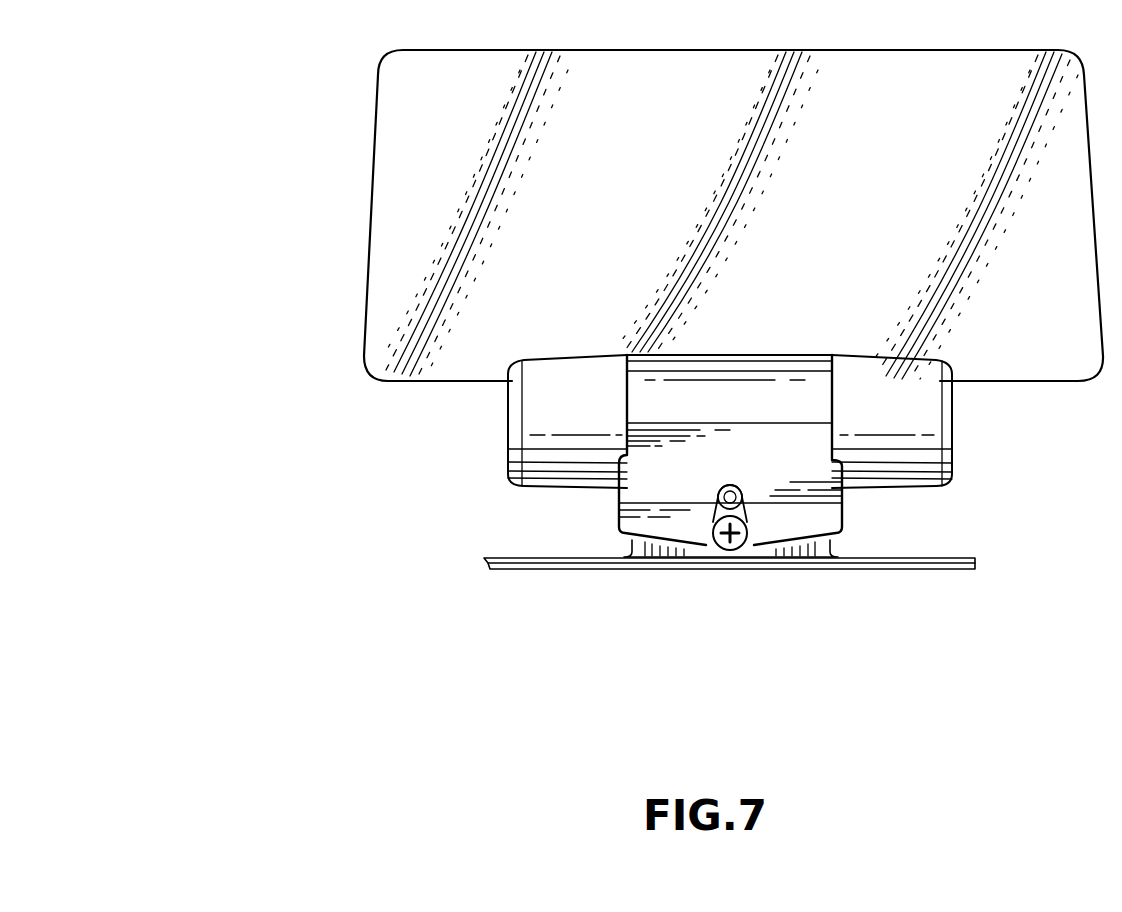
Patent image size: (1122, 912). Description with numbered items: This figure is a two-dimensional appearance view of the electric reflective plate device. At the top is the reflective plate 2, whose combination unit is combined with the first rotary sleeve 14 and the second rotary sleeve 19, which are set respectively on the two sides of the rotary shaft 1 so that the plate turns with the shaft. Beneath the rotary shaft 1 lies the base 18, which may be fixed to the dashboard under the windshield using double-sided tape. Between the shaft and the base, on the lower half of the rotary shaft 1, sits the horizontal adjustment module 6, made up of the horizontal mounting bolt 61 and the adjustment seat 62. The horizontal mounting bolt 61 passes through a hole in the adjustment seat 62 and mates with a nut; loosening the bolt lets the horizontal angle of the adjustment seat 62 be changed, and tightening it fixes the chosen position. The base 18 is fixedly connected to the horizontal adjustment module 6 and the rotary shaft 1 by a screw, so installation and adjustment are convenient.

The reflective plate 2 is at (408, 237).
The first rotary sleeve 14 is at (530, 424).
The second rotary sleeve 19 is at (930, 429).
The rotary shaft 1 is at (842, 495).
The horizontal mounting bolt 61 is at (740, 552).
The adjustment seat 62 is at (650, 568).
The base 18 is at (560, 569).
The horizontal adjustment module 6 is at (750, 660).